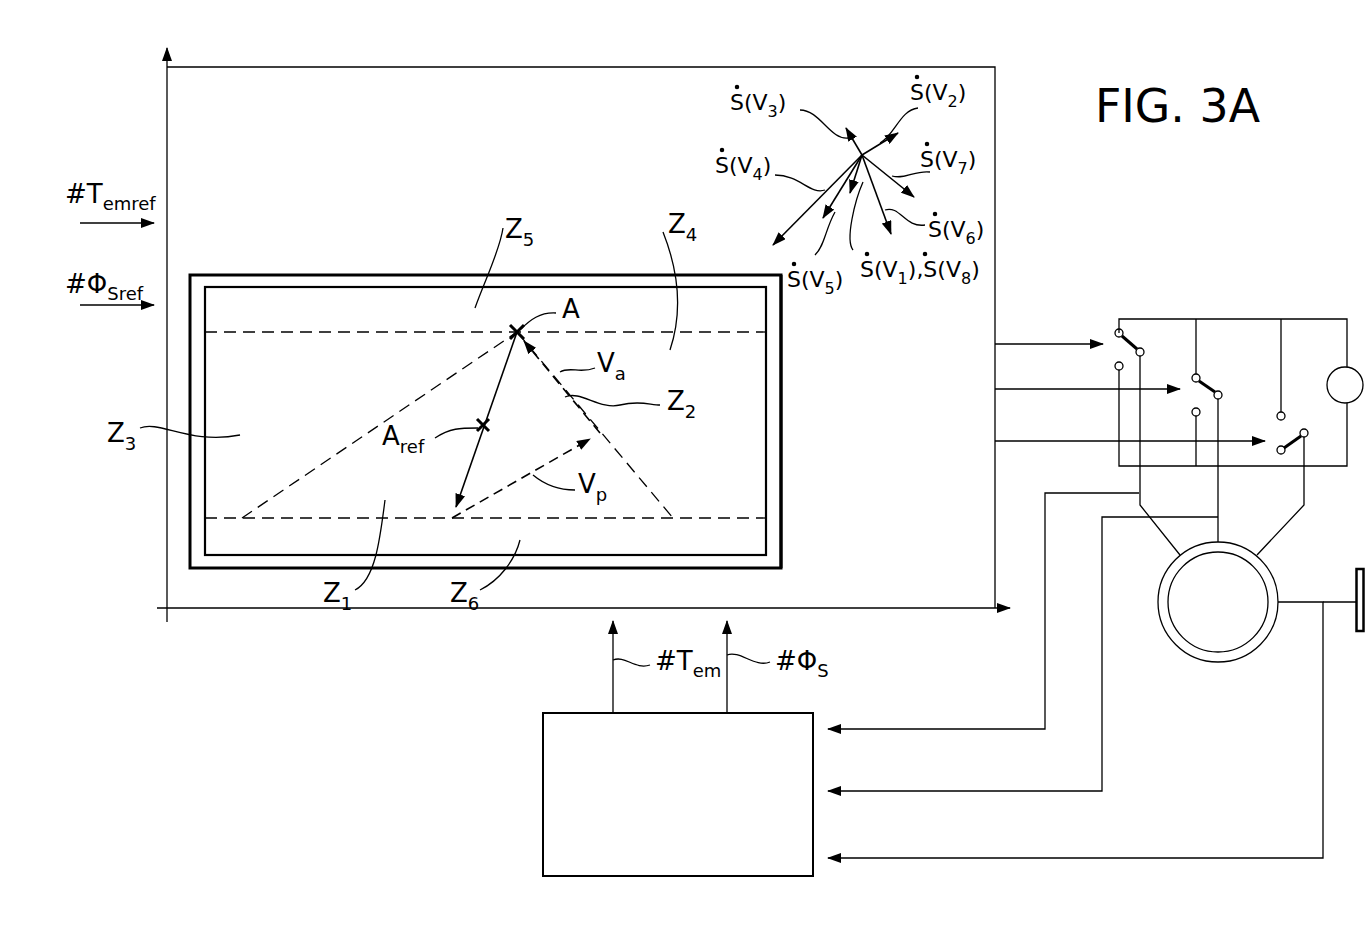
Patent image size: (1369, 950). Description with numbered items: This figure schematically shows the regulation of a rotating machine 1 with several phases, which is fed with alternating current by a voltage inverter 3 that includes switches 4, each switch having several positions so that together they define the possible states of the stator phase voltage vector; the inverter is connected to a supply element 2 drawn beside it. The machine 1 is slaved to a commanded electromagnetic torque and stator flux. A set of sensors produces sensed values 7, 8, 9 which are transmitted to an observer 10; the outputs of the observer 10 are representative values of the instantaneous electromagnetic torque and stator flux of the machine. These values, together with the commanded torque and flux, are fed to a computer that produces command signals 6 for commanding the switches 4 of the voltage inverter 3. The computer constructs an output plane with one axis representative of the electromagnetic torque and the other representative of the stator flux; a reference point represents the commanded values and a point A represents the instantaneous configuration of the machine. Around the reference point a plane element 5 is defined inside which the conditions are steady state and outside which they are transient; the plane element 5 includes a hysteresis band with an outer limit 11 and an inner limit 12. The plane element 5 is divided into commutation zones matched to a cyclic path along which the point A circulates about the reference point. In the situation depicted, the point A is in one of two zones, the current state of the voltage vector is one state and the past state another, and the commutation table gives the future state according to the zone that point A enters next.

The rotating machine 1 is at (1218, 663).
The DC voltage source 2 is at (1350, 378).
The voltage inverter 3 is at (1202, 268).
The switches 4 is at (1130, 331).
The plane element 5 is at (322, 255).
The command signals 6 is at (1040, 441).
The sensed value 7 is at (918, 732).
The sensed value 8 is at (963, 791).
The sensed value 9 is at (990, 858).
The observer 10 is at (568, 805).
The outer limit 11 is at (573, 275).
The inner limit 12 is at (767, 430).